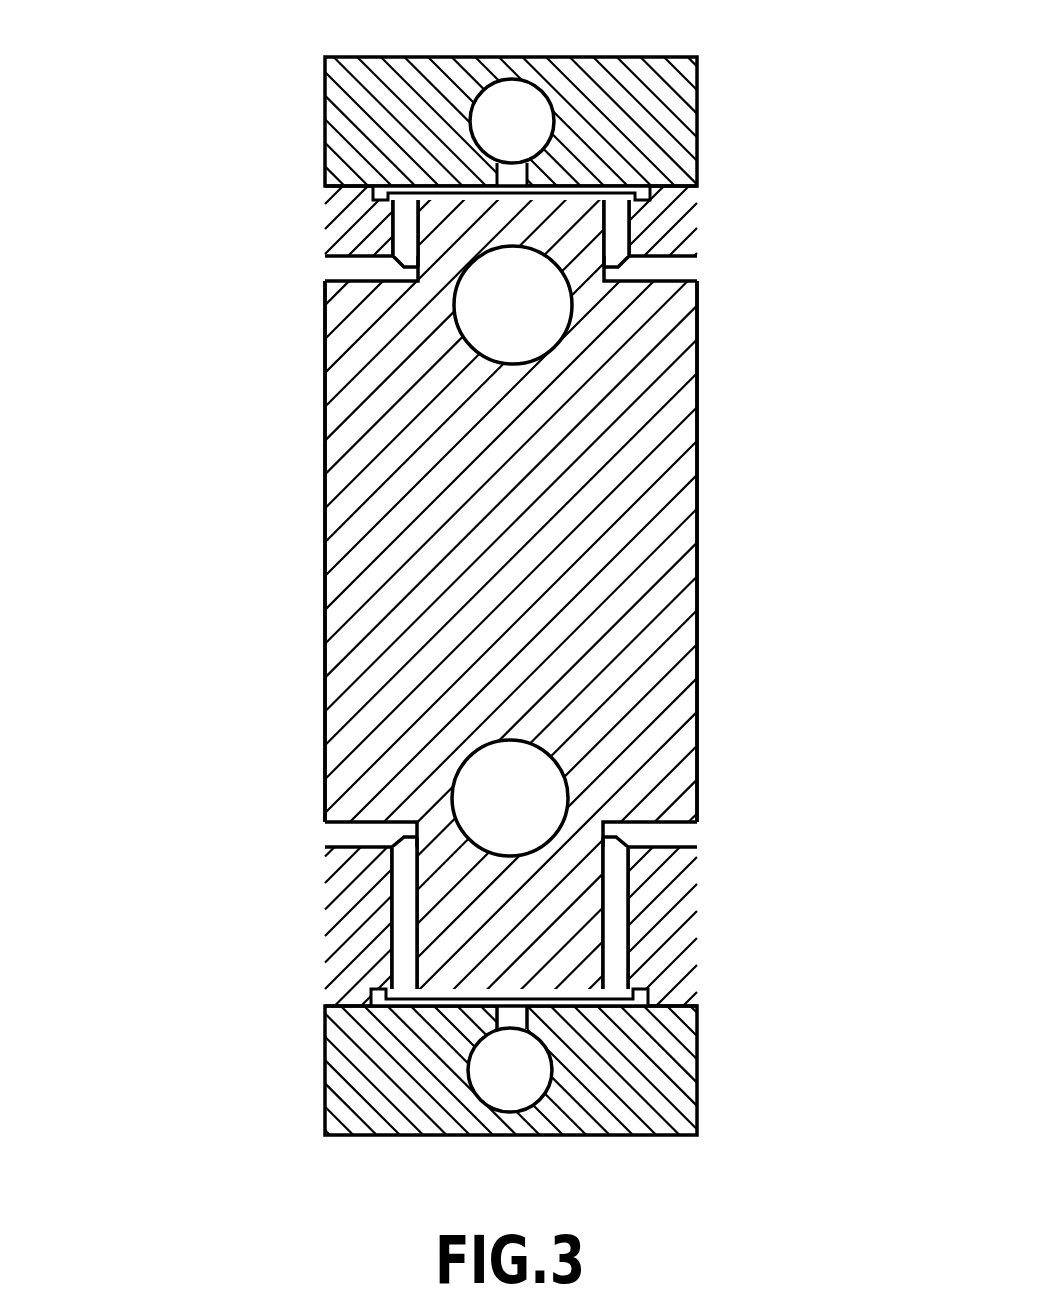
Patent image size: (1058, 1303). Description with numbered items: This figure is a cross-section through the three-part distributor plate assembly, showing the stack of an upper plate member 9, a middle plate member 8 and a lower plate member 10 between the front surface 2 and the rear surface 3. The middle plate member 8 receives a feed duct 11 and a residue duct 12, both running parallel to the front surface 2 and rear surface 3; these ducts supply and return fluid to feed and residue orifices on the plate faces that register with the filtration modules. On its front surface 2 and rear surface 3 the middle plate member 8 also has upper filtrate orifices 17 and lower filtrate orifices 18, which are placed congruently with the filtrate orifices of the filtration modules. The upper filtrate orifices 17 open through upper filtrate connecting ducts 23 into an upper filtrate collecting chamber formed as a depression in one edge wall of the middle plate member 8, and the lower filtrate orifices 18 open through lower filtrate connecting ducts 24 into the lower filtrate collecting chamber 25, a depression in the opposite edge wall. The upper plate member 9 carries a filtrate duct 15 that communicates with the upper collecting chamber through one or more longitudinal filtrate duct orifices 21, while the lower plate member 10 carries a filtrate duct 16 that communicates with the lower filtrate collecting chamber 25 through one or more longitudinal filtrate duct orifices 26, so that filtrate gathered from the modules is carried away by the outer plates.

The front surface 2 is at (325, 542).
The rear surface 3 is at (697, 586).
The middle plate member 8 is at (316, 419).
The upper plate member 9 is at (316, 93).
The lower plate member 10 is at (296, 1097).
The feed duct 11 is at (548, 792).
The residue duct 12 is at (553, 330).
The filtrate duct 15 is at (512, 93).
The filtrate duct 16 is at (510, 1102).
The upper filtrate orifices 17 is at (327, 267).
The lower filtrate orifices 18 is at (328, 830).
The longitudinal filtrate duct orifices 21 is at (517, 178).
The upper filtrate connecting ducts 23 is at (403, 232).
The lower filtrate connecting ducts 24 is at (377, 840).
The lower filtrate collecting chamber 25 is at (422, 1006).
The longitudinal filtrate duct orifices 26 is at (515, 1017).